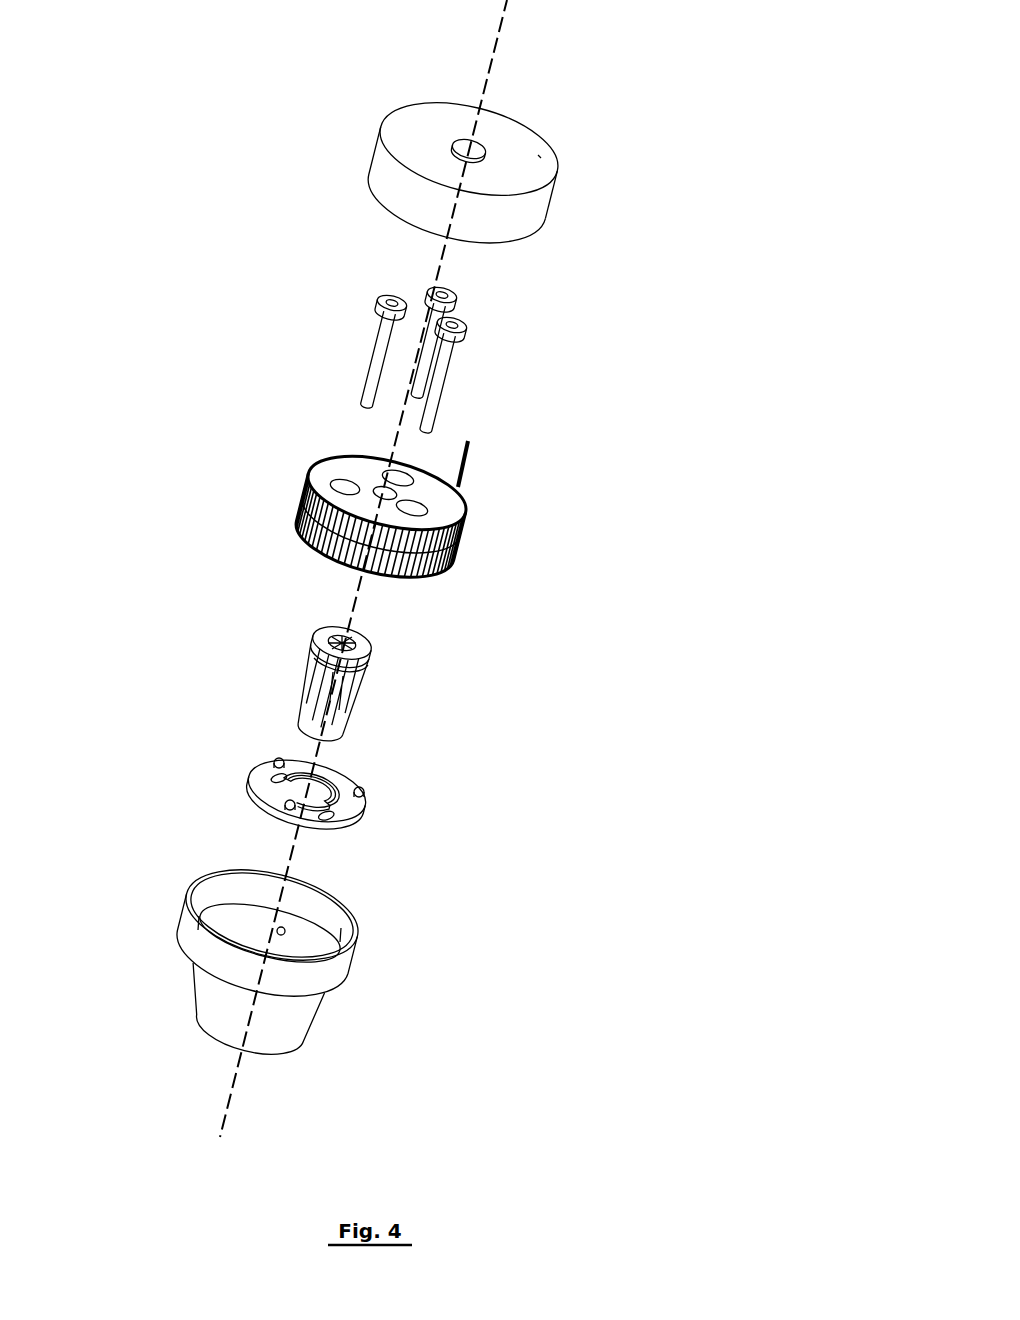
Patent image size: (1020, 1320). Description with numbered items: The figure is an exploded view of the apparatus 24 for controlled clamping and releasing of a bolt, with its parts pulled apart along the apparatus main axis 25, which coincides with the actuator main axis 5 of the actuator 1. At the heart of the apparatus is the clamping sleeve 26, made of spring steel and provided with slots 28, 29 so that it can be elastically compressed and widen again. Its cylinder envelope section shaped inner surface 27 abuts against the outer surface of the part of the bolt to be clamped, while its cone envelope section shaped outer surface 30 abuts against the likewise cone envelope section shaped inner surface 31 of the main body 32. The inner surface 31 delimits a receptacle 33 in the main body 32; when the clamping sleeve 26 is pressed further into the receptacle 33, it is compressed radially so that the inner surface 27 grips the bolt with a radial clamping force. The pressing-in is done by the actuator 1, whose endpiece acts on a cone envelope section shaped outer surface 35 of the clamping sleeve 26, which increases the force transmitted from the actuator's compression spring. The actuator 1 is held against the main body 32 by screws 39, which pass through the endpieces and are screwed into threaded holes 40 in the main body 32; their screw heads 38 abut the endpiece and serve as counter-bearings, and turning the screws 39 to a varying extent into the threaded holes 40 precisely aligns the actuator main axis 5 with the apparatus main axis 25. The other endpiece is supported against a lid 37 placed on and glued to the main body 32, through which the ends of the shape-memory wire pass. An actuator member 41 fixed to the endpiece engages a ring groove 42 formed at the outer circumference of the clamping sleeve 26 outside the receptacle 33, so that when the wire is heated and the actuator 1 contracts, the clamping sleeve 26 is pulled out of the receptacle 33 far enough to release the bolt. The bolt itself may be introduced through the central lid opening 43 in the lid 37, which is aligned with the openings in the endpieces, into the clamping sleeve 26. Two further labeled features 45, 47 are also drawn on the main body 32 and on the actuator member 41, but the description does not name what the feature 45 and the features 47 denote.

The actuator 1 is at (482, 492).
The actuator main axis 5 is at (503, 42).
The apparatus main axis 25 is at (246, 1068).
The apparatus 24 is at (588, 210).
The clamping sleeve 26 is at (370, 678).
The inner surface 27 is at (337, 635).
The slot 28 is at (312, 700).
The slot 29 is at (348, 717).
The outer surface 30 is at (358, 695).
The inner surface 31 is at (285, 948).
The main body 32 is at (290, 1022).
The receptacle 33 is at (245, 932).
The outer surface 35 is at (376, 650).
The lid 37 is at (560, 150).
The screw heads 38 is at (407, 308).
The screws 39 is at (416, 415).
The threaded holes 40 is at (285, 931).
The actuator member 41 is at (368, 812).
The ring groove 42 is at (312, 652).
The central lid opening 43 is at (485, 148).
The cup 45 is at (188, 949).
The lugs 47 is at (286, 803).